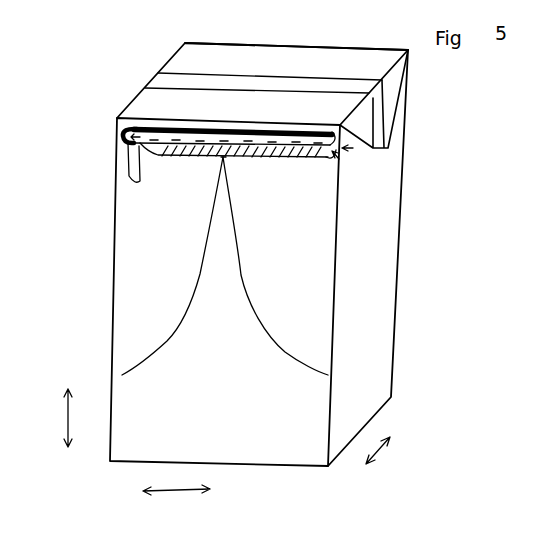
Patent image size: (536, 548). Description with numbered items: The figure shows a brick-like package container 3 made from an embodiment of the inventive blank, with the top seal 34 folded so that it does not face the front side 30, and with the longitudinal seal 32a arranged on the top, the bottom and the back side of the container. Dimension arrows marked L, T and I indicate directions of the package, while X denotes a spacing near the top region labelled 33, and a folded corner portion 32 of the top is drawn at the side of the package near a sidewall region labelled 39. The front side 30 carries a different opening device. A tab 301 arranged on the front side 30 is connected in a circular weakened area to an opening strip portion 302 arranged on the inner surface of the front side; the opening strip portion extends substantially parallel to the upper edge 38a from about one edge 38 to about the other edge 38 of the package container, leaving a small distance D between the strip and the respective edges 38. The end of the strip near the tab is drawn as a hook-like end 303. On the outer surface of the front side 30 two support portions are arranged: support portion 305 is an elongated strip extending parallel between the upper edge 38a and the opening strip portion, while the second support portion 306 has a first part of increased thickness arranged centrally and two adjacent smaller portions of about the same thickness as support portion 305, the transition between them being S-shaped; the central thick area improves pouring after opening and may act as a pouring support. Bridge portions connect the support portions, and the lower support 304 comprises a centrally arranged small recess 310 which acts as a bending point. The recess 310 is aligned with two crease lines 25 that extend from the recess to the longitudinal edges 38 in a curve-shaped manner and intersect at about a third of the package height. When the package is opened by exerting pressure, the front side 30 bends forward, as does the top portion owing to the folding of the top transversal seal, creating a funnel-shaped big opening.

The front side 30 is at (263, 450).
The edge 38 is at (115, 228).
The upper edge 38a is at (297, 107).
The longitudinal seal 32a is at (263, 57).
The top seal 34 is at (222, 58).
The front top region 33 is at (207, 100).
The corner flap 32 is at (388, 102).
The support portion 305 is at (157, 125).
The strip end hook 303 is at (122, 131).
The tab 301 is at (133, 188).
The lower support 304 is at (262, 152).
The second support portion 306 is at (194, 143).
The opening strip portion 302 is at (295, 147).
The recess 310 is at (227, 160).
The crease lines 25 is at (253, 293).
The bag wall 39 is at (418, 256).
The package container 3 is at (441, 371).
The distance D is at (335, 173).
The distance X is at (208, 192).
The length direction L is at (54, 418).
The transverse direction T is at (176, 502).
The depth direction I is at (381, 454).